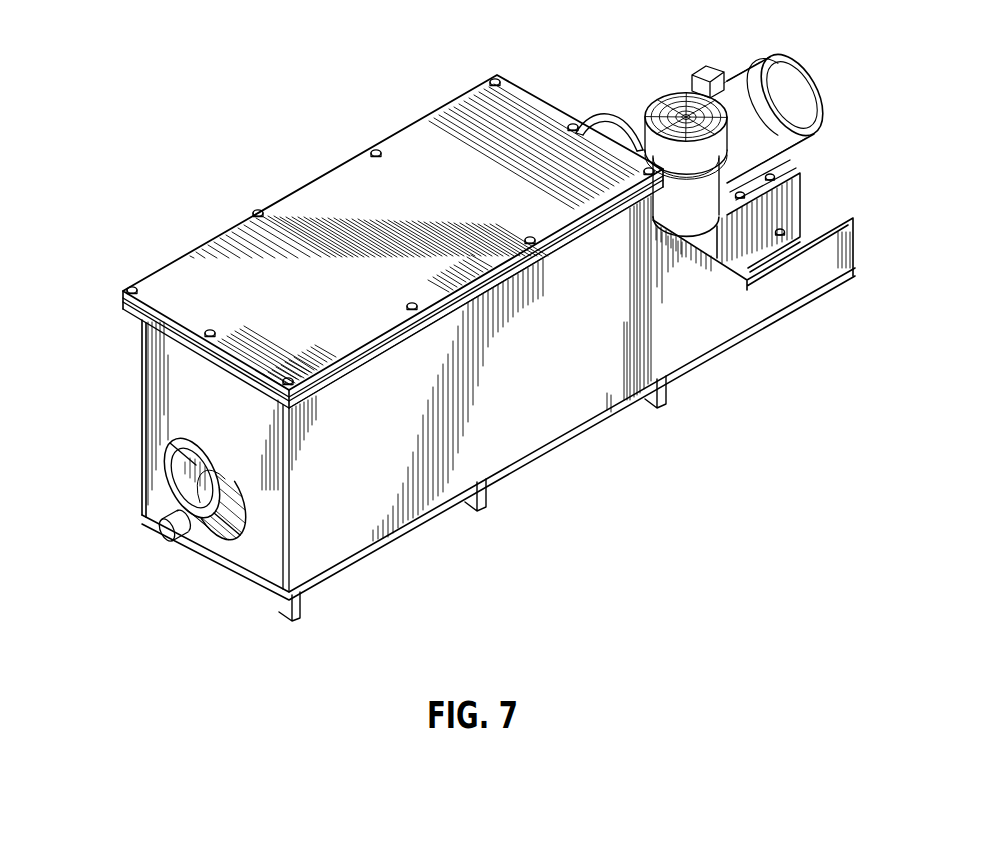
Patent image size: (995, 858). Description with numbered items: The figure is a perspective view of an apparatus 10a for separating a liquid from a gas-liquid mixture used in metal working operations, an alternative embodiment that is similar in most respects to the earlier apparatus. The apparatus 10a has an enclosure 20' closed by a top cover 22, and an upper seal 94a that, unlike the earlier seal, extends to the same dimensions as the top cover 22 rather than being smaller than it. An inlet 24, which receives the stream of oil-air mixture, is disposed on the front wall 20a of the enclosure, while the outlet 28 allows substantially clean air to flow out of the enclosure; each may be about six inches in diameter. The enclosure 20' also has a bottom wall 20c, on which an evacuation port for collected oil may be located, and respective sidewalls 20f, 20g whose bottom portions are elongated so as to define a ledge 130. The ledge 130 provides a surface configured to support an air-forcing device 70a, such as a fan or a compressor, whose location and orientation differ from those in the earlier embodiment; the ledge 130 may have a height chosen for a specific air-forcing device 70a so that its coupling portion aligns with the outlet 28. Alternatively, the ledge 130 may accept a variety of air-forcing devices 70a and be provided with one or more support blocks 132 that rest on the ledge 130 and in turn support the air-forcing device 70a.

The apparatus 10a is at (205, 120).
The top cover 22 is at (329, 323).
The upper seal 94a is at (121, 309).
The enclosure 20' is at (453, 407).
The front wall 20a is at (228, 398).
The sidewall 20f is at (141, 419).
The bottom wall 20c is at (205, 496).
The inlet 24 is at (198, 519).
The sidewall 20g is at (552, 405).
The outlet 28 is at (620, 117).
The air-forcing device 70a is at (668, 101).
The support block 132 is at (802, 182).
The ledge 130 is at (803, 227).